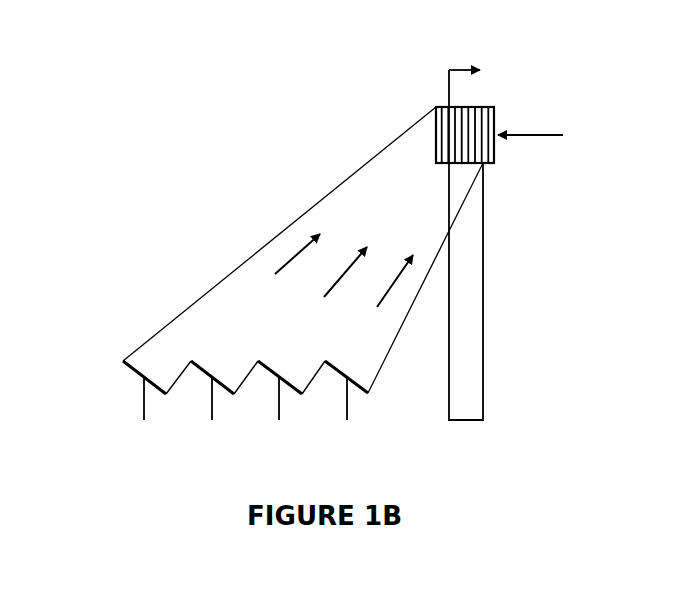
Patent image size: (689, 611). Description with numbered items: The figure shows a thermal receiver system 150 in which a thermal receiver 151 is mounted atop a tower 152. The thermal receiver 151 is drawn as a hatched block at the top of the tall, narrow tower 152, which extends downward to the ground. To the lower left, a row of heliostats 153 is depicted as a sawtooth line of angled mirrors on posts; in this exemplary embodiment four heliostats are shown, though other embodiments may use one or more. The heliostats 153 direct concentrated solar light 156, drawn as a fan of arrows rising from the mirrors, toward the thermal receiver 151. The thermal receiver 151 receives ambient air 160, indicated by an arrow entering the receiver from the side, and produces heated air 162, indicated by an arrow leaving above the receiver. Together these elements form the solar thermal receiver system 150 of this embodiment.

The thermal receiver system 150 is at (366, 52).
The thermal receiver 151 is at (482, 107).
The tower 152 is at (448, 390).
The heliostats 153 is at (128, 348).
The concentrated solar light 156 is at (280, 253).
The ambient air 160 is at (528, 135).
The heated air 162 is at (449, 70).